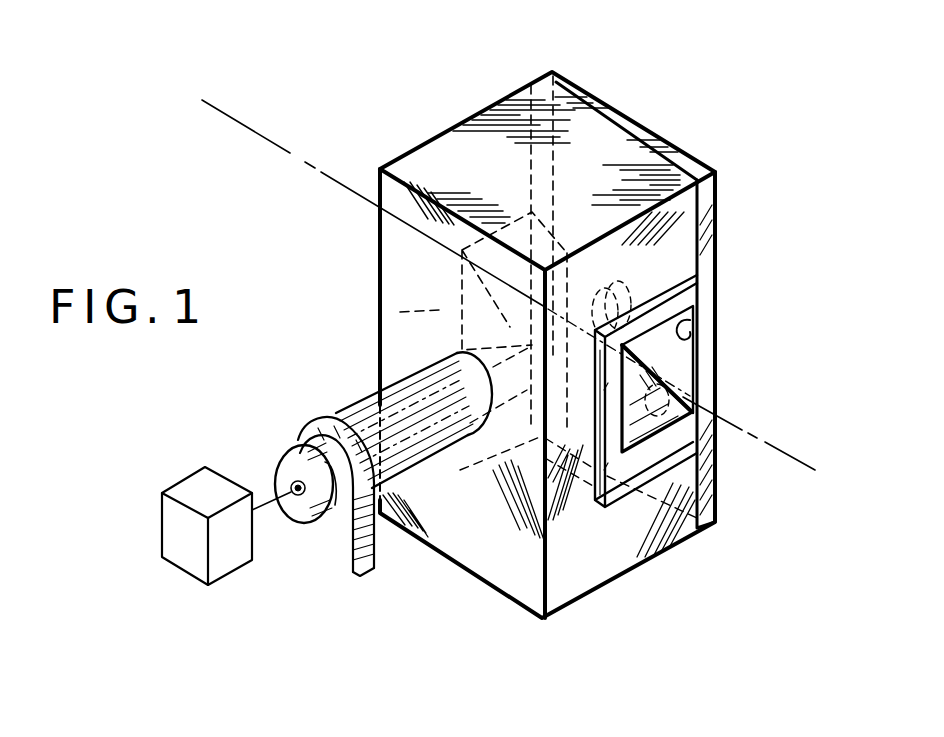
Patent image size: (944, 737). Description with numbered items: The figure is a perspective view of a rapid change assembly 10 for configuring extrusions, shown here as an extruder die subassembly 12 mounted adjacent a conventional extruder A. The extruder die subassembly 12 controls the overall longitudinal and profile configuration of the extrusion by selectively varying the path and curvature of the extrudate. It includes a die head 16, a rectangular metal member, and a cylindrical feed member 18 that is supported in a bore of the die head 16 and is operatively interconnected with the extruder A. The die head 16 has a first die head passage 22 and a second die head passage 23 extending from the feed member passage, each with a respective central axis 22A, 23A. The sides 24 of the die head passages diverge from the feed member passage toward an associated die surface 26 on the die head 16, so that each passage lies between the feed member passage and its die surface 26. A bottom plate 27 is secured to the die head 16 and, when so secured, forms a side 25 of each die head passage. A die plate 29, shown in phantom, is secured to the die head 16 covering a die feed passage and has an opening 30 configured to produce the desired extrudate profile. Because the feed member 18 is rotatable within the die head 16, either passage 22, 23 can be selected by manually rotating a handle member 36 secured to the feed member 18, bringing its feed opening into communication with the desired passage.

The rapid change assembly 10 is at (312, 55).
The extruder die subassembly 12 is at (497, 104).
The die head 16 is at (453, 168).
The cylindrical feed member 18 is at (358, 418).
The first die head passage 22 is at (712, 360).
The central axis 22A is at (777, 452).
The second die head passage 23 is at (400, 312).
The central axis 23A is at (262, 140).
The sides of the die head passages 24 is at (700, 426).
The side of the die head passage 25 is at (703, 322).
The die surface 26 is at (592, 553).
The bottom plate 27 is at (628, 125).
The die plate 29 is at (722, 297).
The opening 30 is at (712, 380).
The handle member 36 is at (350, 562).
The extruder A is at (187, 543).